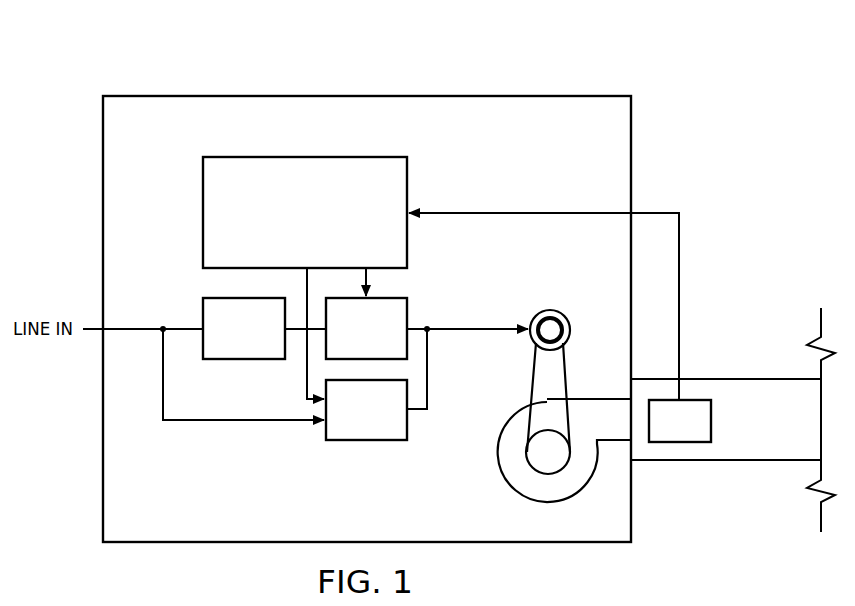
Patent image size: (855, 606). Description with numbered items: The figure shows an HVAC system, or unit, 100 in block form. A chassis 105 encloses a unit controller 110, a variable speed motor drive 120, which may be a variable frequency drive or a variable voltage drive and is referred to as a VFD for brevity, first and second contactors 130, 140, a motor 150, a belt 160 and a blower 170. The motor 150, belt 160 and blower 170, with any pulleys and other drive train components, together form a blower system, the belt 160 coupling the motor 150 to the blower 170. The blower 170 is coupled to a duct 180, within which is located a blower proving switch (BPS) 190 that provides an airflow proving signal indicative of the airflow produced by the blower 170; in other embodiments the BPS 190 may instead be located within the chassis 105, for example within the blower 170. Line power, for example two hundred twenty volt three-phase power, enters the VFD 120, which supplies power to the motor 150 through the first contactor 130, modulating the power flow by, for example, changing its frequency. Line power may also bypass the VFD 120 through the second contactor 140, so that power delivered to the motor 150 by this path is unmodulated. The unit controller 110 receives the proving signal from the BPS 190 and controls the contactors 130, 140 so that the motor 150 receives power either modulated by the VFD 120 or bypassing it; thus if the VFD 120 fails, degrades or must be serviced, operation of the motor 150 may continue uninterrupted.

The HVAC system 100 is at (536, 60).
The chassis 105 is at (170, 95).
The unit controller 110 is at (272, 156).
The variable speed motor drive 120 is at (203, 312).
The first contactor 130 is at (409, 317).
The second contactor 140 is at (355, 441).
The motor 150 is at (548, 310).
The belt 160 is at (531, 390).
The blower 170 is at (499, 448).
The duct 180 is at (750, 461).
The blower proving switch (BPS) 190 is at (711, 420).